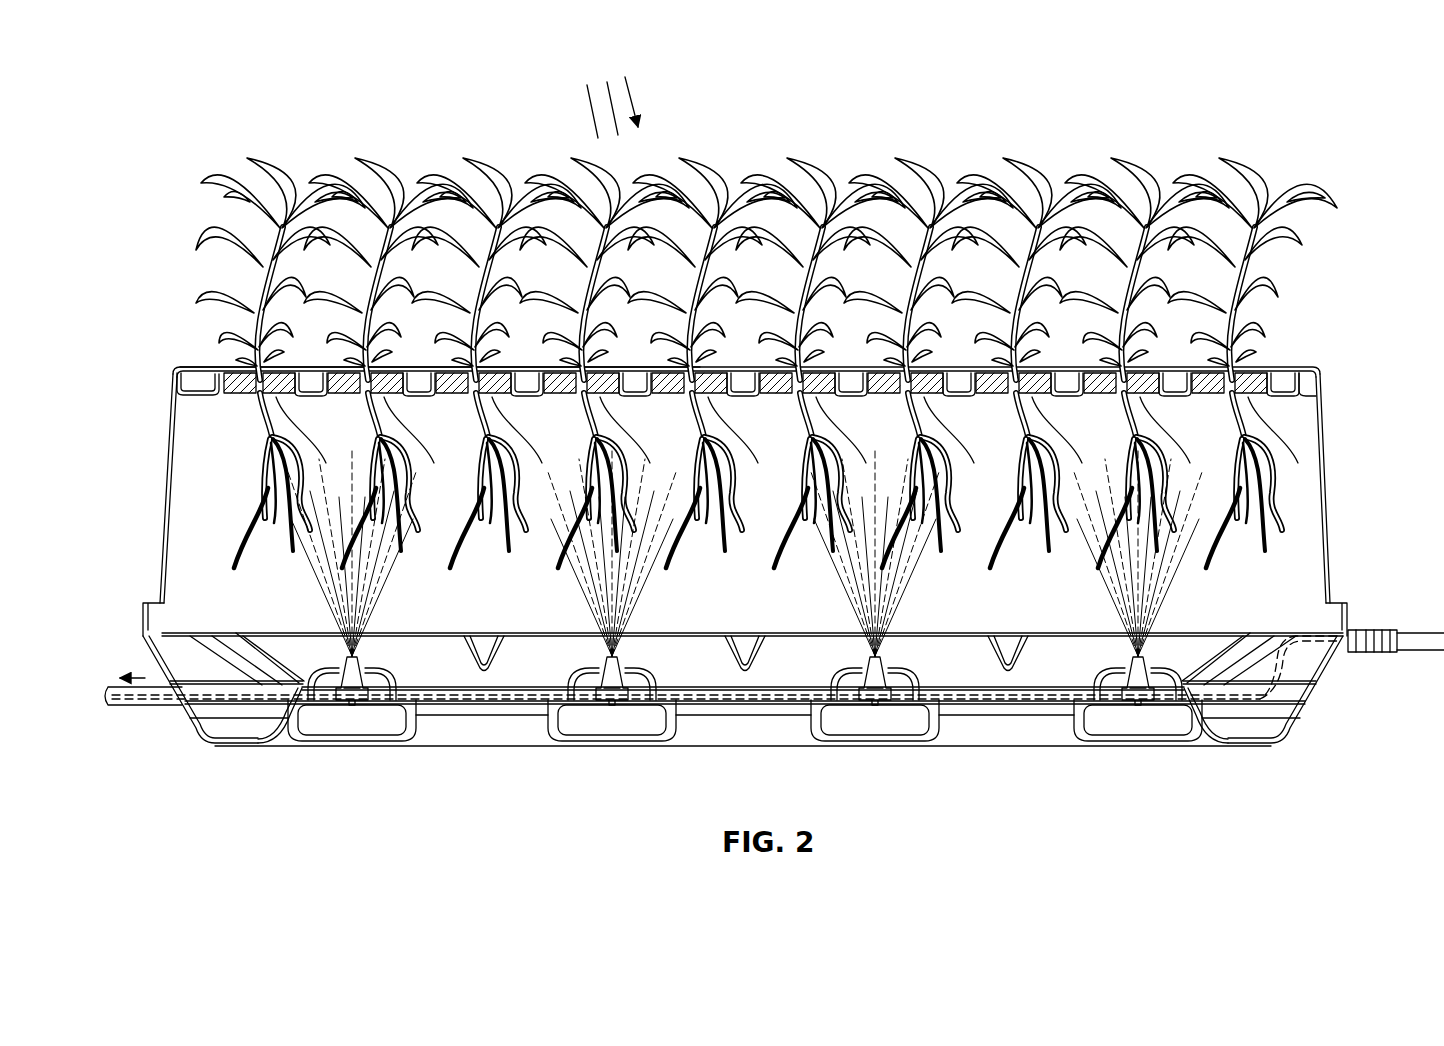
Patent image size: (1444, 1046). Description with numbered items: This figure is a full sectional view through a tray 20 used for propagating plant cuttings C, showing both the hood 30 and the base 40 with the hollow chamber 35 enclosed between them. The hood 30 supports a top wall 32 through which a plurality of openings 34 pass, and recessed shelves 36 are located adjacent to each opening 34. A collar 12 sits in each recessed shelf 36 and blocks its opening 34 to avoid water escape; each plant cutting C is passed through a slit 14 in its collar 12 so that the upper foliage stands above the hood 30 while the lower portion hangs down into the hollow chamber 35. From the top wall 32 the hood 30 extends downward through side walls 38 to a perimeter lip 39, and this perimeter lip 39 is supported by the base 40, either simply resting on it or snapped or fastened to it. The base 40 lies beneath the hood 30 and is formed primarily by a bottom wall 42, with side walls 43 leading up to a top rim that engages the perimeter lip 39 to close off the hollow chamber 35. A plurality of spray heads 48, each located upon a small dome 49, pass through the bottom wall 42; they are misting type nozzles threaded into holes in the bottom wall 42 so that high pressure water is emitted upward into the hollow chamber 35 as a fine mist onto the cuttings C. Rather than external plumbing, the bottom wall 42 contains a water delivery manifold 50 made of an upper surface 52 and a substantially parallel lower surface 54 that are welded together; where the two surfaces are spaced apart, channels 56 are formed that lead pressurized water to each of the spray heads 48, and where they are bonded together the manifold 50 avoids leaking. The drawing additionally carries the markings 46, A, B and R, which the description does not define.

The tray 20 is at (1374, 316).
The collar 12 is at (1262, 373).
The slit 14 is at (1250, 396).
The hood 30 is at (1316, 368).
The top wall 32 is at (195, 367).
The openings 34 is at (774, 480).
The hollow chamber 35 is at (745, 602).
The recessed shelves 36 is at (212, 397).
The side walls 38 is at (168, 470).
The perimeter lip 39 is at (152, 601).
The base 40 is at (1290, 735).
The bottom wall 42 is at (1062, 743).
The side walls 43 is at (190, 715).
The supply tube 46 is at (108, 703).
The spray head 48 is at (362, 665).
The small dome 49 is at (575, 672).
The water delivery manifold 50 is at (1334, 710).
The upper surface 52 is at (286, 640).
The lower surface 54 is at (285, 728).
The channels 56 is at (497, 705).
The spray A is at (648, 592).
The light B is at (590, 115).
The plant cutting C is at (1060, 155).
The root region R is at (1290, 495).